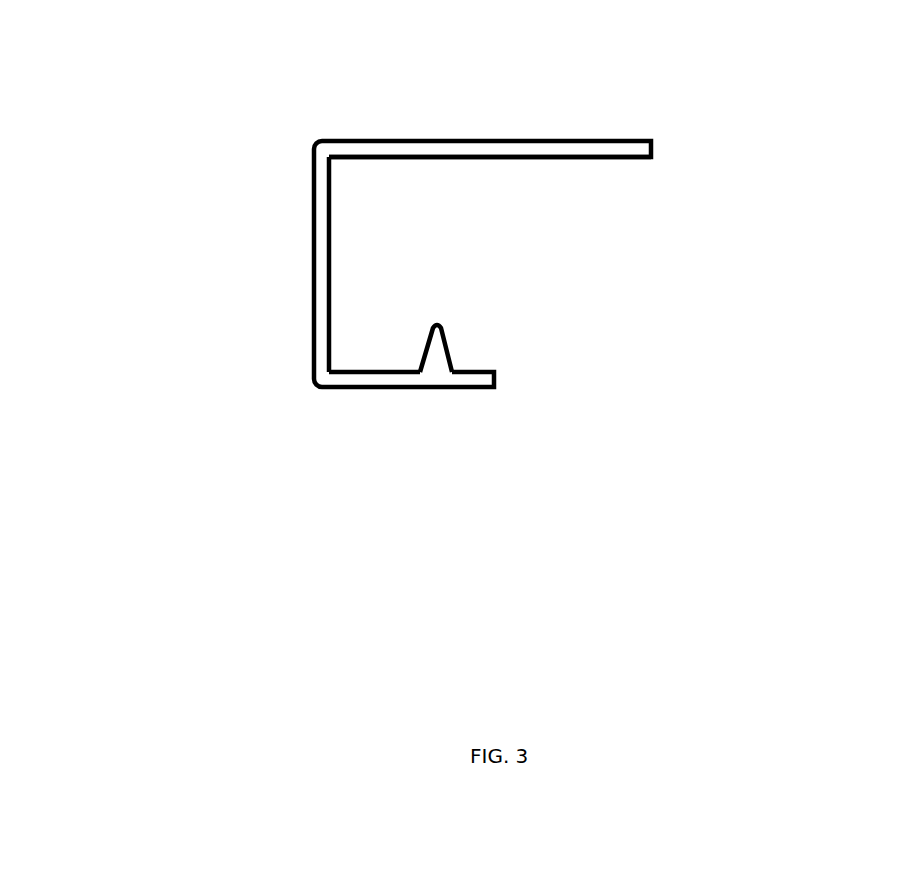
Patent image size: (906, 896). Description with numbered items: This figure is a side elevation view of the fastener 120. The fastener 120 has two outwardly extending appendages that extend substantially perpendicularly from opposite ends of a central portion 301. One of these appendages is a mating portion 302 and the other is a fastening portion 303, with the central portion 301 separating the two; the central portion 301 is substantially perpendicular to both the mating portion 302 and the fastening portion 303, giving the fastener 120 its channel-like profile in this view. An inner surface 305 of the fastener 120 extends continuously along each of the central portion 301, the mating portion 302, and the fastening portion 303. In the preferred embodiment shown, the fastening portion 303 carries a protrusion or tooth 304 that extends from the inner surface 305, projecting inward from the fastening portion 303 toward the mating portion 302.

The fastener 120 is at (411, 274).
The central portion 301 is at (311, 247).
The mating portion 302 is at (440, 138).
The fastening portion 303 is at (392, 388).
The protrusion or tooth 304 is at (447, 345).
The inner surface 305 is at (518, 158).